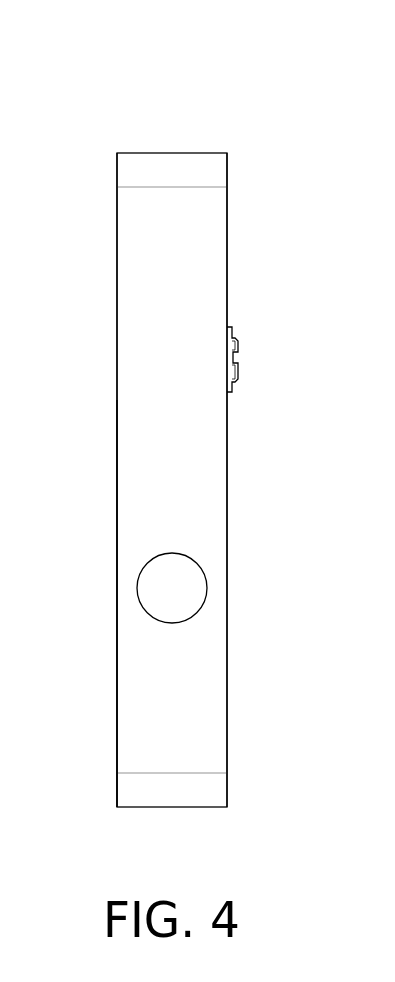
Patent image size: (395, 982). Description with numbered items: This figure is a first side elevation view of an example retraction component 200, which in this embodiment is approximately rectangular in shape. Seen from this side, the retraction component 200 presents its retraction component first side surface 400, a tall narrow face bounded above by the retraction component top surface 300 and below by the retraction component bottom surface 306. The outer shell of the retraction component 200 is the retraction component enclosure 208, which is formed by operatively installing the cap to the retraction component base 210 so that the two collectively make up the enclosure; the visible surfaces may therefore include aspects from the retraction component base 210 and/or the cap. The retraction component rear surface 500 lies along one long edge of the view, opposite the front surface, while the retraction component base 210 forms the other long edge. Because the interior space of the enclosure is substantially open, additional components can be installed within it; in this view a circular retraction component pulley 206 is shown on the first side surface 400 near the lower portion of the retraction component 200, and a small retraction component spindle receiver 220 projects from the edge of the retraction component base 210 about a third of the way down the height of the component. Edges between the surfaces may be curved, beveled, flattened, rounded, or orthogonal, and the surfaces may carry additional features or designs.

The retraction component 200 is at (108, 110).
The retraction component top surface 300 is at (196, 152).
The retraction component bottom surface 306 is at (172, 808).
The retraction component base 210 is at (218, 237).
The retraction component enclosure 208 is at (118, 366).
The retraction component rear surface 500 is at (118, 538).
The retraction component spindle receiver 220 is at (238, 350).
The retraction component first side surface 400 is at (193, 501).
The retraction component pulley 206 is at (176, 610).